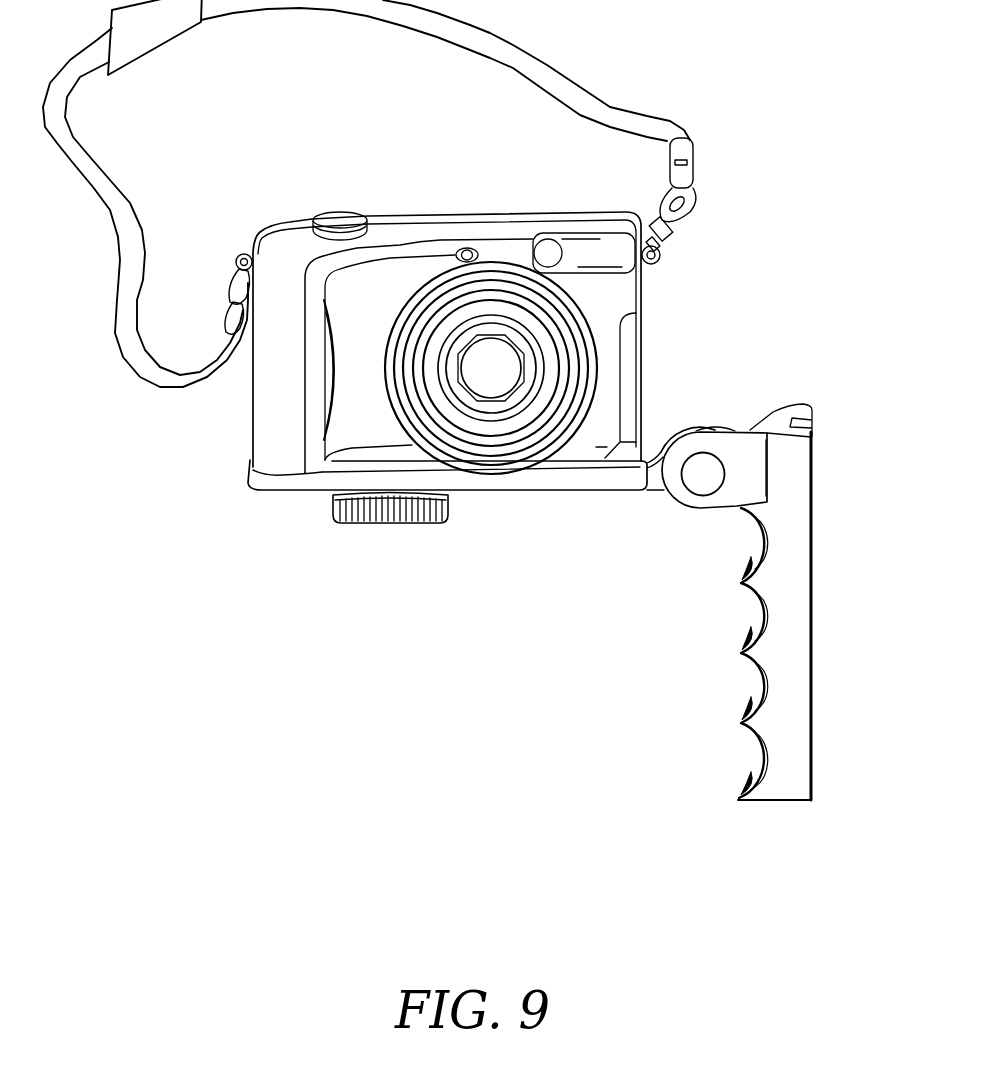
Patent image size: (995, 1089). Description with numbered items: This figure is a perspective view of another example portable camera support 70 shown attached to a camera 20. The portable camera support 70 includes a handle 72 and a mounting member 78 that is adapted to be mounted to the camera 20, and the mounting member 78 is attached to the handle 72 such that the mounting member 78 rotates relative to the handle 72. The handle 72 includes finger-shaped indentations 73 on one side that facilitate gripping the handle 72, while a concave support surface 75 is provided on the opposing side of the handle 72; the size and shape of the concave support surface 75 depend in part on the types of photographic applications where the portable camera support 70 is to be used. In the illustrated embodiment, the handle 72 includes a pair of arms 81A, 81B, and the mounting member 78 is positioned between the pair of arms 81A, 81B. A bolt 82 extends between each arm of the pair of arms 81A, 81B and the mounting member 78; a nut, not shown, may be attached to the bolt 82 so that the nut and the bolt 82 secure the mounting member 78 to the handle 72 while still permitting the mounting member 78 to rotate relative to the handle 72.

The camera 20 is at (262, 417).
The portable camera support 70 is at (690, 585).
The handle 72 is at (797, 581).
The finger-shaped indentations 73 is at (757, 542).
The concave support surface 75 is at (800, 419).
The mounting member 78 is at (278, 480).
The arm 81A is at (684, 449).
The arm 81B is at (716, 425).
The bolt 82 is at (703, 480).